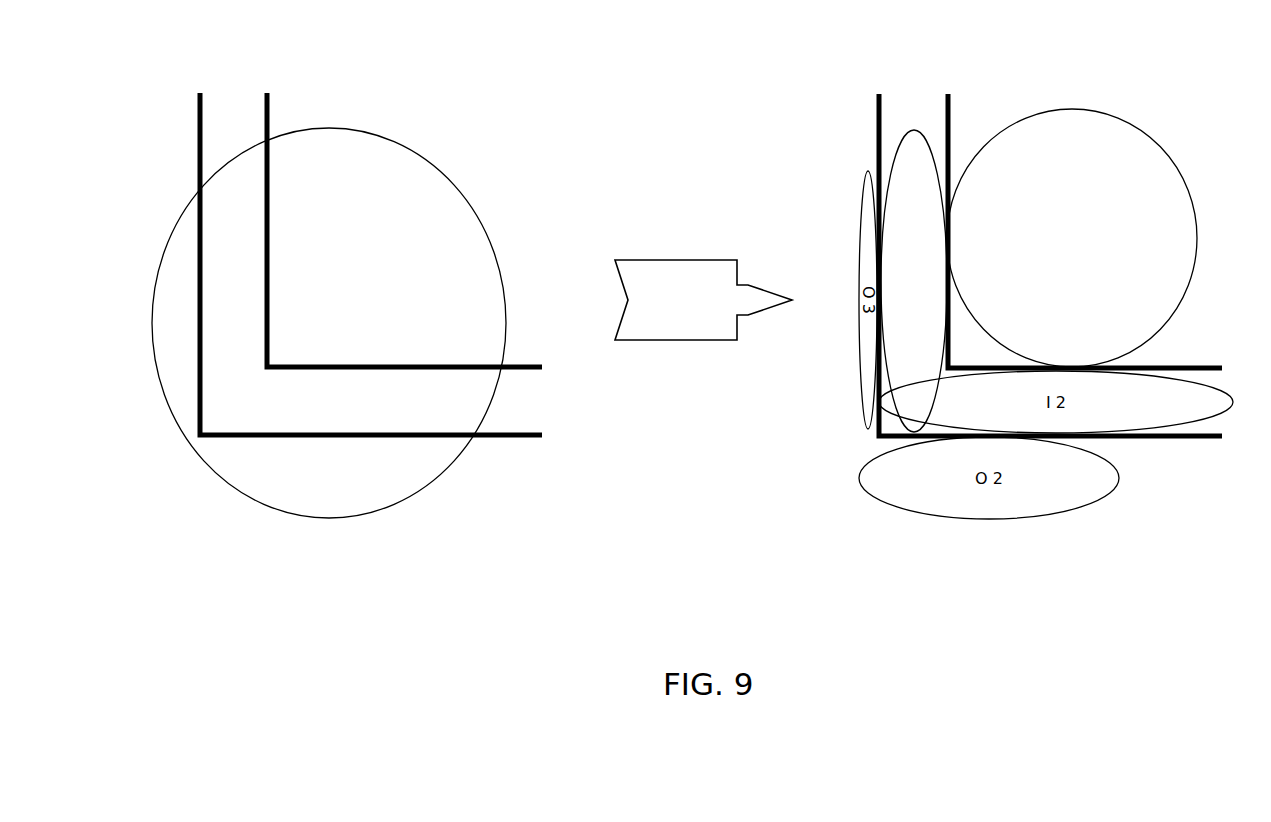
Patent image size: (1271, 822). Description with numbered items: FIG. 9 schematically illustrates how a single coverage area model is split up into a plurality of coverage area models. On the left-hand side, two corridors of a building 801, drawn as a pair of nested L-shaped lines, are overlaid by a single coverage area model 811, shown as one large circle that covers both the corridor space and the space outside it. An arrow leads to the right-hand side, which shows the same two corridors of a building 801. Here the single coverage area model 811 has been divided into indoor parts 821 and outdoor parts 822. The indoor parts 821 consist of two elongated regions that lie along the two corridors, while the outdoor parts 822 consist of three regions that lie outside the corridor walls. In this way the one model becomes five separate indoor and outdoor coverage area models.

The corridors of a building 801 is at (197, 117).
The single coverage area model 811 is at (160, 262).
The indoor parts 821 is at (914, 133).
The outdoor parts 822 is at (1065, 110).